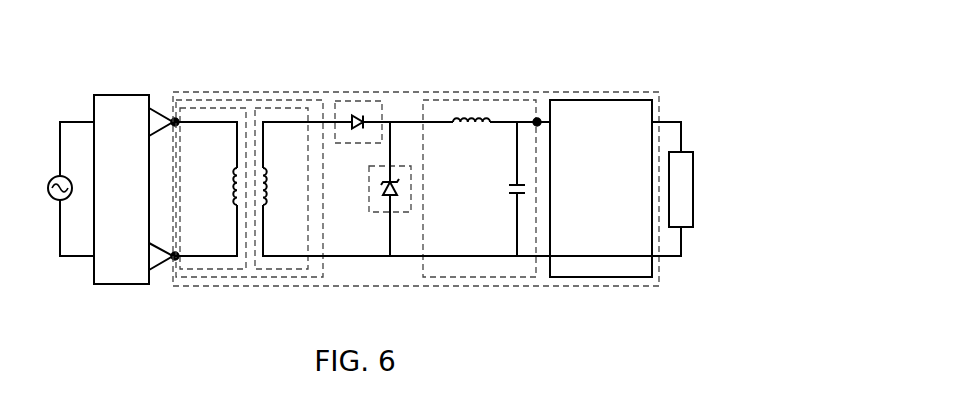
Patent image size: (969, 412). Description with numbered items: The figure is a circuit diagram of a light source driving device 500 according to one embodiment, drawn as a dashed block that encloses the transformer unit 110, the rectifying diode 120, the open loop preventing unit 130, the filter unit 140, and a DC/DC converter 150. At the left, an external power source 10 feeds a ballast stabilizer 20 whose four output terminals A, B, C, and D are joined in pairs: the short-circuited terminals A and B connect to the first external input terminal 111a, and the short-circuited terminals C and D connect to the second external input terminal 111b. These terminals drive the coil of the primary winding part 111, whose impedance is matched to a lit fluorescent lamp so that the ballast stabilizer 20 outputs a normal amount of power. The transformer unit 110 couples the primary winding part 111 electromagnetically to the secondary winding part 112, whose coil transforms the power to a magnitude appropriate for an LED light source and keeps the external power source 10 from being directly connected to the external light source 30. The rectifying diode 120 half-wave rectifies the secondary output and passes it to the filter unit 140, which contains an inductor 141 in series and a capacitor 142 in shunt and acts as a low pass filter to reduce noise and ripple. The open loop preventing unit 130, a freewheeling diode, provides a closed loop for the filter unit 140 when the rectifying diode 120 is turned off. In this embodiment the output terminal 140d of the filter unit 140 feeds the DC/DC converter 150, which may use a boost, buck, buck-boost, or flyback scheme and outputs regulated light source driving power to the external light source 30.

The external power source 10 is at (53, 176).
The ballast stabilizer 20 is at (117, 94).
The external light source 30 is at (686, 228).
The transformer unit 110 is at (282, 166).
The primary winding part 111 is at (207, 108).
The first external input terminal 111a is at (174, 105).
The second external input terminal 111b is at (174, 272).
The secondary winding part 112 is at (300, 108).
The rectifying diode 120 is at (363, 101).
The open loop preventing unit 130 is at (369, 188).
The filter unit 140 is at (521, 166).
The output terminal 140d is at (538, 118).
The inductor 141 is at (472, 128).
The capacitor 142 is at (509, 189).
The DC/DC converter 150 is at (602, 100).
The light source driving device 500 is at (636, 92).